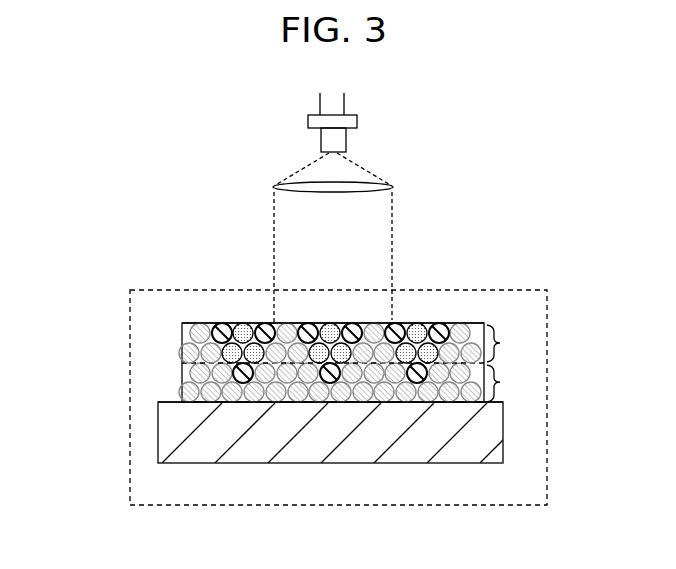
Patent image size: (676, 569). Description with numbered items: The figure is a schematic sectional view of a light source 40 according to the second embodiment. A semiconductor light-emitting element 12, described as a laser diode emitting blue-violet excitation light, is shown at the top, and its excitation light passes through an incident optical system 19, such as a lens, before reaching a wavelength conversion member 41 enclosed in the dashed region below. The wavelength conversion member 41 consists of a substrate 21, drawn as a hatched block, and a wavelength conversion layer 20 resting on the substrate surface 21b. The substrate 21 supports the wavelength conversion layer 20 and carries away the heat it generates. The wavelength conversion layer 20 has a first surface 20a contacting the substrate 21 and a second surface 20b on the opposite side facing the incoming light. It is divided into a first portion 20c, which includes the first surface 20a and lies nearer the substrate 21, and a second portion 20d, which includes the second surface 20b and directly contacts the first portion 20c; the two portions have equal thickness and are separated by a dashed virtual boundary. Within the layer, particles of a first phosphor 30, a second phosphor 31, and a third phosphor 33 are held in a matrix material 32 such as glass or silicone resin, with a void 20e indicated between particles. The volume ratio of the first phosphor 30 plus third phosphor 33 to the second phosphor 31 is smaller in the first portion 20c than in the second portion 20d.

The semiconductor light-emitting element 12 is at (332, 121).
The incident optical system 19 is at (392, 187).
The light source 40 is at (213, 233).
The wavelength conversion member 41 is at (129, 407).
The substrate 21 is at (188, 445).
The substrate surface 21b is at (175, 397).
The wavelength conversion layer 20 is at (186, 377).
The second phosphor 31 is at (187, 352).
The matrix material 32 is at (480, 332).
The first phosphor 30 is at (219, 331).
The third phosphor 33 is at (418, 326).
The second surface 20b is at (458, 320).
The first surface 20a is at (406, 407).
The void between particles 20e is at (264, 370).
The second portion 20d is at (500, 343).
The first portion 20c is at (500, 382).